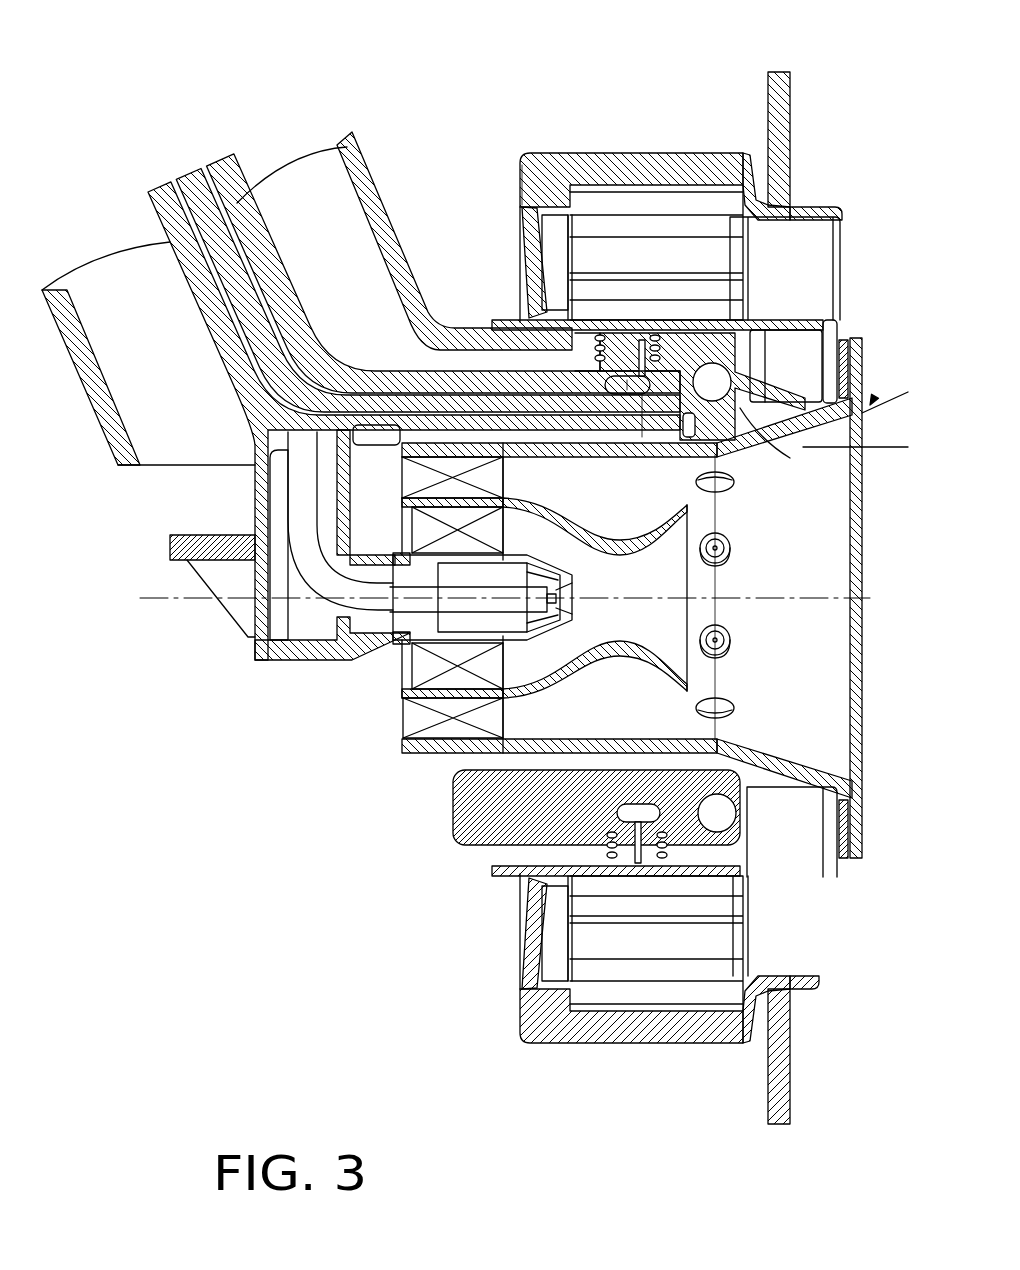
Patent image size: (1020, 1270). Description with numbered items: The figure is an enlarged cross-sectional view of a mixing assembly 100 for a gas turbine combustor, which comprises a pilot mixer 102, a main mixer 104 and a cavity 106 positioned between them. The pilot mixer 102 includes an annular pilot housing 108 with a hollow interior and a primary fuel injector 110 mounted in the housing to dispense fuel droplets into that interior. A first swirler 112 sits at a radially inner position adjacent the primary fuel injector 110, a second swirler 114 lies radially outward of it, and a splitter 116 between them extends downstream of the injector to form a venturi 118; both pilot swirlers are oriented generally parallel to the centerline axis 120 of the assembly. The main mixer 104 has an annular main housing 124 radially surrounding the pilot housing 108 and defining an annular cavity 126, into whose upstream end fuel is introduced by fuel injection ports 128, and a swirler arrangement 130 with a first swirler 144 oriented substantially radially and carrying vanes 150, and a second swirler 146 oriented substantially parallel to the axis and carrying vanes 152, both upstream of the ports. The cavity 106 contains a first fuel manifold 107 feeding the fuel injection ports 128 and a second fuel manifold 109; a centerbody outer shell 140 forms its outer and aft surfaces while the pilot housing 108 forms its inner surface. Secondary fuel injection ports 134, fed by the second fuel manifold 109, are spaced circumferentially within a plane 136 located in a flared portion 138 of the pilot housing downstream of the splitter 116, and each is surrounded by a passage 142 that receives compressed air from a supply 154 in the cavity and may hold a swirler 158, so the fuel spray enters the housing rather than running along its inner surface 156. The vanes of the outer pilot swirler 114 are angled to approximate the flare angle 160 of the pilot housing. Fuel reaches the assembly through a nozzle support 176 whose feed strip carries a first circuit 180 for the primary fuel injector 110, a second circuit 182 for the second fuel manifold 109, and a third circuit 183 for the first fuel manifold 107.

The mixing assembly 100 is at (402, 62).
The pilot mixer 102 is at (820, 518).
The main mixer 104 is at (856, 227).
The cavity 106 is at (440, 362).
The first fuel manifold 107 is at (643, 437).
The pilot housing 108 is at (783, 762).
The second fuel manifold 109 is at (730, 374).
The primary fuel injector 110 is at (582, 574).
The first swirler 112 is at (423, 665).
The second swirler 114 is at (420, 745).
The splitter 116 is at (417, 712).
The venturi 118 is at (588, 660).
The centerline axis 120 is at (748, 600).
The main housing 124 is at (800, 200).
The annular cavity 126 is at (815, 259).
The fuel injection ports 128 is at (665, 330).
The swirler arrangement 130 is at (522, 138).
The secondary fuel injection ports 134 is at (732, 546).
The plane 136 is at (718, 670).
The flared portion 138 is at (766, 732).
The centerbody outer shell 140 is at (838, 328).
The passage 142 is at (735, 481).
The first swirler 144 is at (628, 142).
The second swirler 146 is at (510, 231).
The vanes 150 is at (652, 1043).
The vanes 152 is at (540, 940).
The supply 154 is at (765, 415).
The inner surface 156 is at (518, 458).
The swirler 158 is at (645, 392).
The flare angle 160 is at (893, 458).
The nozzle support 176 is at (358, 134).
The first circuit 180 is at (160, 190).
The second circuit 182 is at (180, 176).
The third circuit 183 is at (215, 168).